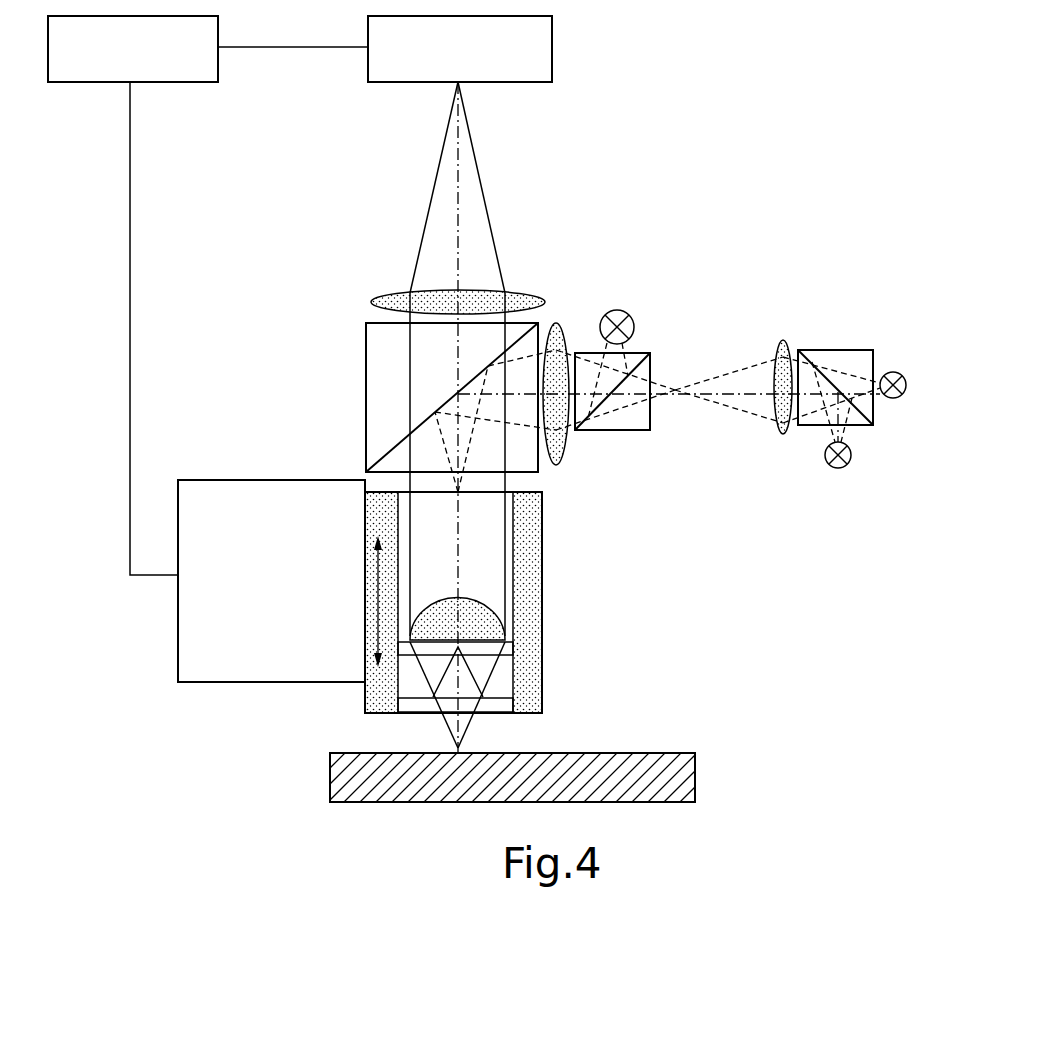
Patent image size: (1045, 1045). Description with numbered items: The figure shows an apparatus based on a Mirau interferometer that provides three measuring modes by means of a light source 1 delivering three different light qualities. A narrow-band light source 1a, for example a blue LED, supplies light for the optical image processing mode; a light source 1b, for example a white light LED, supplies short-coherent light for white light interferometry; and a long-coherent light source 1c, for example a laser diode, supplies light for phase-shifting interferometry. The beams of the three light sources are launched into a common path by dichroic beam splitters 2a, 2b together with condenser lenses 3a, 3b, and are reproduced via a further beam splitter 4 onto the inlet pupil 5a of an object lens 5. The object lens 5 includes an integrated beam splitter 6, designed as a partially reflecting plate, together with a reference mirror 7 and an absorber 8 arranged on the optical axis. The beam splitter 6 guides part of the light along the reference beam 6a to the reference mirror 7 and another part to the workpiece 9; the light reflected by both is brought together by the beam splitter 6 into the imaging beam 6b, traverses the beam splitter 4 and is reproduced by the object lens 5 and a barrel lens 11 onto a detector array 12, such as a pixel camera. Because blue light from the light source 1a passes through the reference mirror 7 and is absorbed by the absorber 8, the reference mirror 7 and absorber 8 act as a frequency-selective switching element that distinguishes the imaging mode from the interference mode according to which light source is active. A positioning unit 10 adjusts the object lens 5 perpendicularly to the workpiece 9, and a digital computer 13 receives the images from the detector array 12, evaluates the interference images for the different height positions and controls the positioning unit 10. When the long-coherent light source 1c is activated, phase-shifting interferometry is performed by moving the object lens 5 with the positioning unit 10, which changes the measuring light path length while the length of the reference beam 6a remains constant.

The light source 1 is at (727, 290).
The light source 1a is at (620, 311).
The light source 1b is at (900, 373).
The light source 1c is at (851, 460).
The dichroic beam splitter 2a is at (640, 432).
The dichroic beam splitter 2b is at (838, 350).
The condenser lens 3a is at (556, 323).
The condenser lens 3b is at (785, 436).
The beam splitter 4 is at (377, 393).
The object lens 5 is at (530, 592).
The inlet pupil 5a is at (462, 493).
The beam splitter 6 is at (540, 702).
The reference beam 6a is at (472, 670).
The imaging beam 6b is at (440, 672).
The reference mirror 7 is at (520, 650).
The absorber 8 is at (470, 640).
The workpiece 9 is at (690, 768).
The positioning unit 10 is at (283, 588).
The barrel lens 11 is at (383, 296).
The detector array 12 is at (473, 58).
The digital computer 13 is at (146, 58).